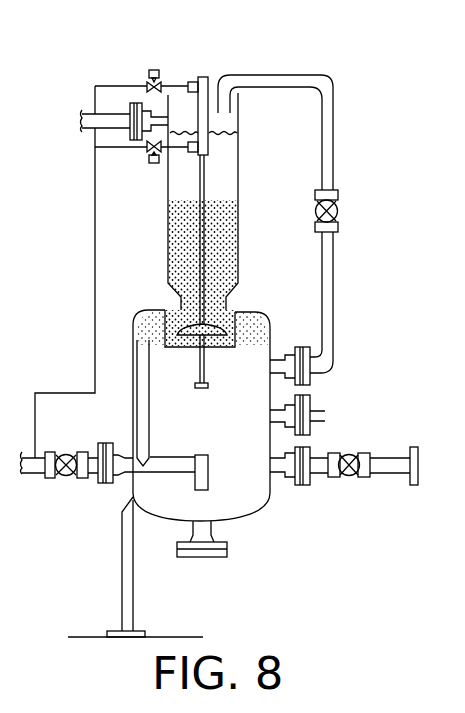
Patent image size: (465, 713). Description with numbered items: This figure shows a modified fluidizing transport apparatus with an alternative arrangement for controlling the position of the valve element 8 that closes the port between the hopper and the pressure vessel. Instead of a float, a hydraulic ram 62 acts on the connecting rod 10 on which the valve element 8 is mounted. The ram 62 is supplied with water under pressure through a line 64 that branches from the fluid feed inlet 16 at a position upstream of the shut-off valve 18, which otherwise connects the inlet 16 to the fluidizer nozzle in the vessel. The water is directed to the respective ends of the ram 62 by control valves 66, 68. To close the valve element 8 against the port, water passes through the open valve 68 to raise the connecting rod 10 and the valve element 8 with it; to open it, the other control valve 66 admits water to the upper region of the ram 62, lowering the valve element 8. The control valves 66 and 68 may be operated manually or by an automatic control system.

The valve element 8 is at (232, 312).
The connecting rod 10 is at (212, 228).
The fluid feed inlet 16 is at (34, 477).
The shut-off valve 18 is at (67, 478).
The hydraulic ram 62 is at (203, 77).
The line 64 is at (95, 274).
The control valve 66 is at (153, 70).
The control valve 68 is at (153, 163).